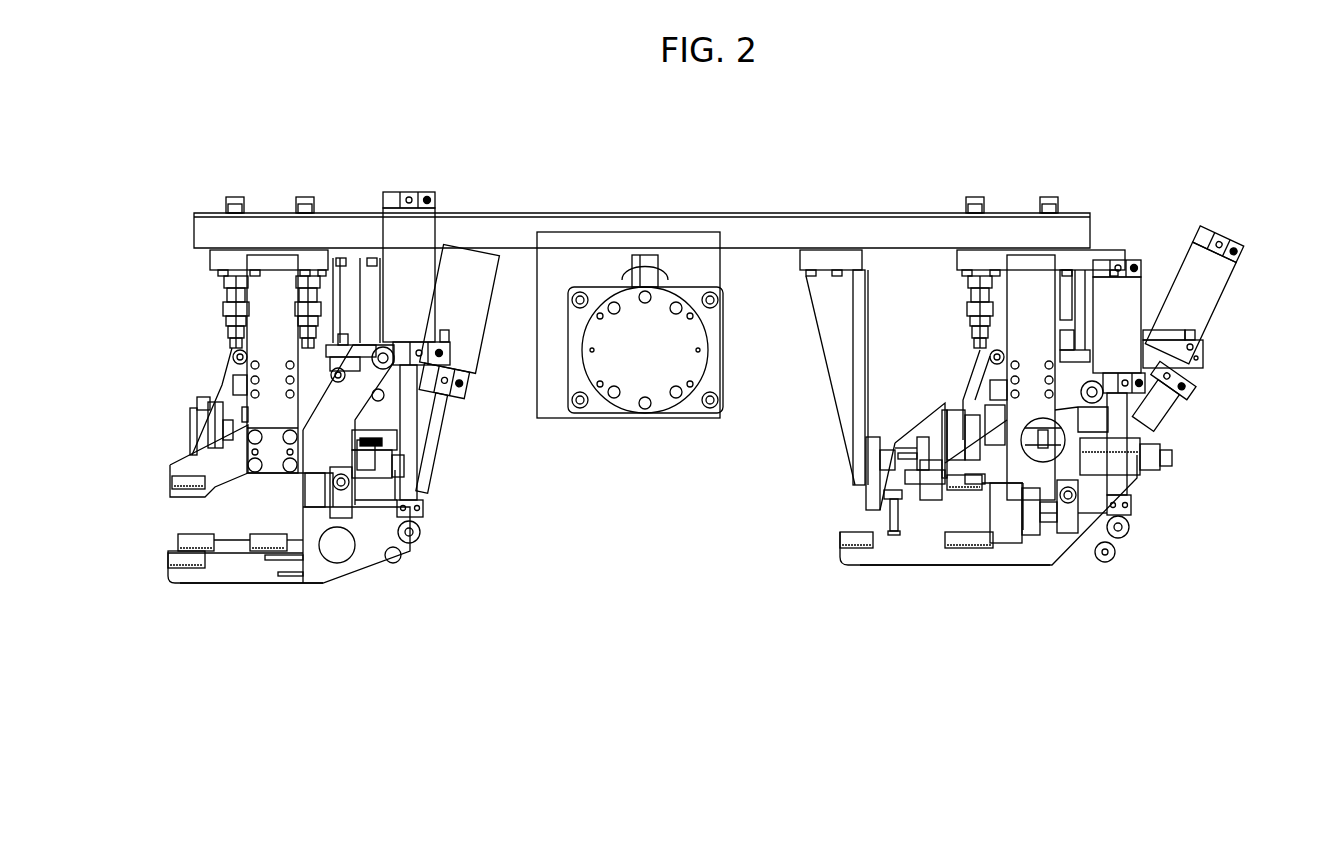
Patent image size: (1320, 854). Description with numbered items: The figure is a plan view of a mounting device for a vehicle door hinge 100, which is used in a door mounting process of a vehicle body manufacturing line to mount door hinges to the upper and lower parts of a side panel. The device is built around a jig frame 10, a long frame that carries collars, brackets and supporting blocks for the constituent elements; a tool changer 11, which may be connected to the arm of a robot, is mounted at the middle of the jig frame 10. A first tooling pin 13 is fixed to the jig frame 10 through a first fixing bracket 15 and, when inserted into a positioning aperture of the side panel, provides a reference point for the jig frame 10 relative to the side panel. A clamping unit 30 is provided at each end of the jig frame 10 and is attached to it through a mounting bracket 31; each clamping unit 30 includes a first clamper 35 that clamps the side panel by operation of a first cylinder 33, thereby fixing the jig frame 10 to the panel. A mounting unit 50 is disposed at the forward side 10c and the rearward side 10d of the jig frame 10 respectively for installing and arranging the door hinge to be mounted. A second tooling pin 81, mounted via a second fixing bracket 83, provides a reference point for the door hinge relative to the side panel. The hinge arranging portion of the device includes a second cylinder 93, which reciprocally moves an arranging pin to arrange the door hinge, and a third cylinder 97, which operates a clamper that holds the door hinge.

The mounting device for a vehicle door hinge 100 is at (723, 139).
The jig frame 10 is at (806, 213).
The forward side of the jig frame 10c is at (346, 213).
The rearward side of the jig frame 10d is at (1016, 213).
The tool changer 11 is at (637, 388).
The first tooling pin 13 is at (890, 520).
The first fixing bracket 15 is at (830, 352).
The clamping unit 30 is at (352, 578).
The mounting bracket 31 is at (262, 288).
The first cylinder 33 is at (428, 228).
The first clamper 35 is at (235, 570).
The mounting unit 50 is at (385, 478).
The second tooling pin 81 is at (920, 478).
The second fixing bracket 83 is at (906, 445).
The second cylinder 93 is at (405, 452).
The third cylinder 97 is at (1172, 362).